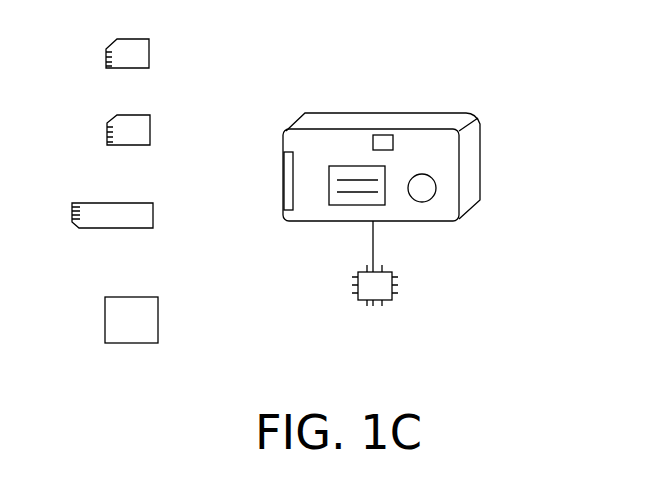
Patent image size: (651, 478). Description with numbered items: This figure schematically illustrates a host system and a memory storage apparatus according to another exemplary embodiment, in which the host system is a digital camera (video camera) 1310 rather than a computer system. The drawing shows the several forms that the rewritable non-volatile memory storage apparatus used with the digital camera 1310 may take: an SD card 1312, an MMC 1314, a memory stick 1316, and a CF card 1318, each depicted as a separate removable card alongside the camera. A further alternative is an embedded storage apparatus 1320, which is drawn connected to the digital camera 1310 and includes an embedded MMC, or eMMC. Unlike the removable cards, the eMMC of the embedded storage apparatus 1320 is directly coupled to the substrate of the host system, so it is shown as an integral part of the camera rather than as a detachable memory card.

The digital camera 1310 is at (481, 152).
The SD card 1312 is at (150, 43).
The MMC 1314 is at (150, 119).
The memory stick 1316 is at (153, 215).
The CF card 1318 is at (158, 312).
The embedded storage apparatus 1320 is at (396, 286).